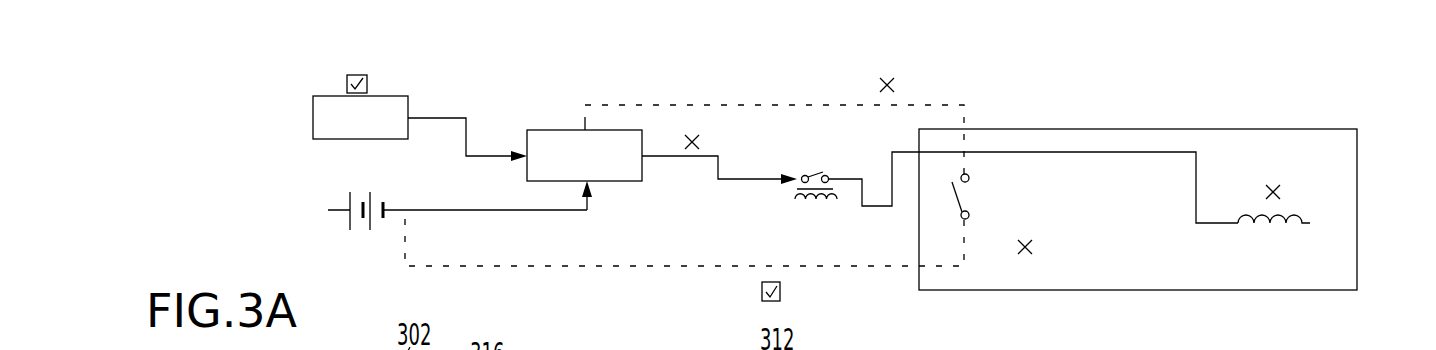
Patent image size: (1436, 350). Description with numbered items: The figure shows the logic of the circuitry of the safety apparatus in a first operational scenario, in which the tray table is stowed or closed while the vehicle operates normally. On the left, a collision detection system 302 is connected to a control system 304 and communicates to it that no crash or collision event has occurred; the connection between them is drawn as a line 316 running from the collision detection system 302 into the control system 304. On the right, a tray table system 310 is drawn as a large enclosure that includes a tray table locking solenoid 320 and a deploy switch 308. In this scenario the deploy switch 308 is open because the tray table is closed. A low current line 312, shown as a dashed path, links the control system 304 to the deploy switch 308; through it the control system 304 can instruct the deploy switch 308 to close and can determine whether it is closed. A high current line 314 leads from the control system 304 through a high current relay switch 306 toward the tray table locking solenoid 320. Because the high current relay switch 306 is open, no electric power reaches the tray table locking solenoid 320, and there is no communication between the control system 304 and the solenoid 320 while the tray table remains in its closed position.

The collision detection system 302 is at (383, 96).
The connection line 316 is at (466, 118).
The control system 304 is at (537, 130).
The low current line 312 is at (750, 105).
The high current line 314 is at (691, 156).
The high current relay switch 306 is at (816, 203).
The deploy switch 308 is at (969, 212).
The tray table system 310 is at (1276, 129).
The tray table locking solenoid 320 is at (1307, 253).